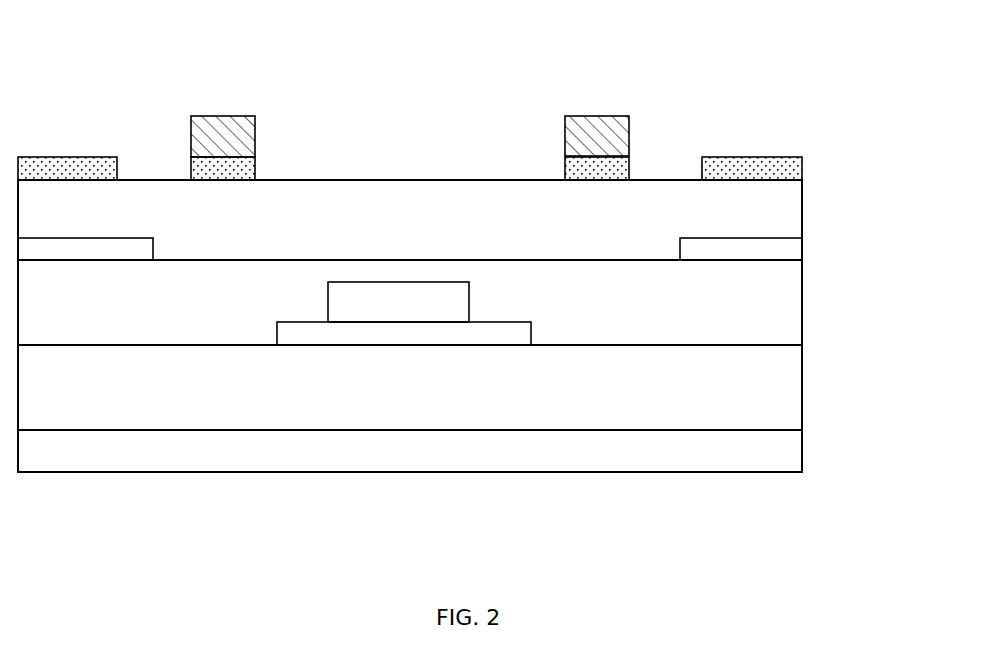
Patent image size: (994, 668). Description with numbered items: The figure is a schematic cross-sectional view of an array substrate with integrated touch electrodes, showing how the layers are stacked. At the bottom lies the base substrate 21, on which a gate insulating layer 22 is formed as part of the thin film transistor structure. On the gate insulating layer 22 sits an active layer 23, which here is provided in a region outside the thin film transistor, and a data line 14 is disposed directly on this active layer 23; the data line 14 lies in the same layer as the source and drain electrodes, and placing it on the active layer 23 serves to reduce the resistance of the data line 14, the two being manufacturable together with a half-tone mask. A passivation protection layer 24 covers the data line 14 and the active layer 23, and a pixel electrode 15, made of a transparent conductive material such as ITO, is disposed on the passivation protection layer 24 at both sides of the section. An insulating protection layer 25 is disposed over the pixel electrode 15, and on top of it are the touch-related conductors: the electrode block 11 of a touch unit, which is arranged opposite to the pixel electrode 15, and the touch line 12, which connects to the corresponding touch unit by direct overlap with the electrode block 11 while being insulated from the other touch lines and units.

The electrode block 11 is at (793, 168).
The touch line 12 is at (233, 123).
The data line 14 is at (438, 307).
The pixel electrode 15 is at (793, 253).
The base substrate 21 is at (793, 456).
The gate insulating layer 22 is at (793, 393).
The active layer 23 is at (339, 332).
The passivation protection layer 24 is at (793, 308).
The insulating protection layer 25 is at (793, 206).